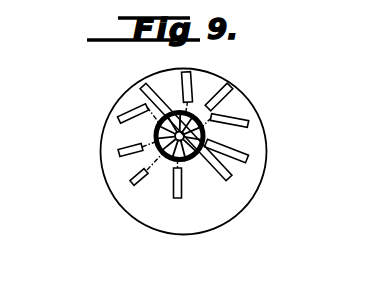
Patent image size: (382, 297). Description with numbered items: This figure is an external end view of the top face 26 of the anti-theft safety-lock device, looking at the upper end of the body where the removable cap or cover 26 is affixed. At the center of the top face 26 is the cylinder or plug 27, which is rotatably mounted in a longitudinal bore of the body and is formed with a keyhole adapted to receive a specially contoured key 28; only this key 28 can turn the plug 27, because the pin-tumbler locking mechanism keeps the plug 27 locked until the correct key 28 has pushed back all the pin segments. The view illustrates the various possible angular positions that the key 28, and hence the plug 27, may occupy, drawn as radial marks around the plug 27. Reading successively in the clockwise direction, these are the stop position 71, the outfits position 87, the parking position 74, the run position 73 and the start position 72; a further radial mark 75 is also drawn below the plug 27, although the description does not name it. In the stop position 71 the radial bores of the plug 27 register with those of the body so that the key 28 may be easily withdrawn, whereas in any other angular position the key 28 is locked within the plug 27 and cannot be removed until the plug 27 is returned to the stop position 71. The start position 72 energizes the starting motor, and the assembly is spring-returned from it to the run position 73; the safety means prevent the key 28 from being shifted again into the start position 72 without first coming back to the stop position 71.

The top face 26 is at (237, 193).
The plug 27 is at (232, 113).
The key 28 is at (243, 176).
The stop position 71 is at (136, 94).
The start position 72 is at (119, 117).
The run position 73 is at (120, 148).
The parking position 74 is at (161, 158).
The blade 75 is at (181, 199).
The outfits position 87 is at (181, 166).